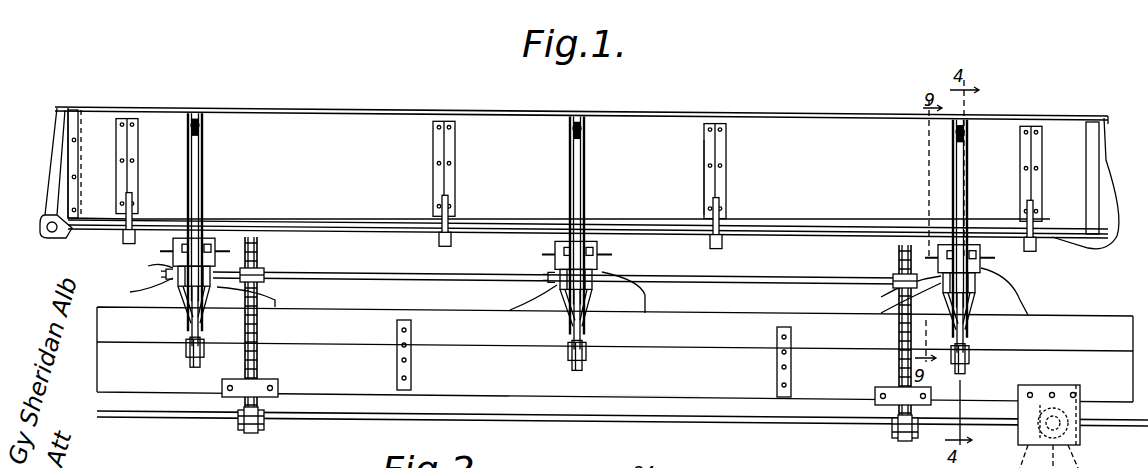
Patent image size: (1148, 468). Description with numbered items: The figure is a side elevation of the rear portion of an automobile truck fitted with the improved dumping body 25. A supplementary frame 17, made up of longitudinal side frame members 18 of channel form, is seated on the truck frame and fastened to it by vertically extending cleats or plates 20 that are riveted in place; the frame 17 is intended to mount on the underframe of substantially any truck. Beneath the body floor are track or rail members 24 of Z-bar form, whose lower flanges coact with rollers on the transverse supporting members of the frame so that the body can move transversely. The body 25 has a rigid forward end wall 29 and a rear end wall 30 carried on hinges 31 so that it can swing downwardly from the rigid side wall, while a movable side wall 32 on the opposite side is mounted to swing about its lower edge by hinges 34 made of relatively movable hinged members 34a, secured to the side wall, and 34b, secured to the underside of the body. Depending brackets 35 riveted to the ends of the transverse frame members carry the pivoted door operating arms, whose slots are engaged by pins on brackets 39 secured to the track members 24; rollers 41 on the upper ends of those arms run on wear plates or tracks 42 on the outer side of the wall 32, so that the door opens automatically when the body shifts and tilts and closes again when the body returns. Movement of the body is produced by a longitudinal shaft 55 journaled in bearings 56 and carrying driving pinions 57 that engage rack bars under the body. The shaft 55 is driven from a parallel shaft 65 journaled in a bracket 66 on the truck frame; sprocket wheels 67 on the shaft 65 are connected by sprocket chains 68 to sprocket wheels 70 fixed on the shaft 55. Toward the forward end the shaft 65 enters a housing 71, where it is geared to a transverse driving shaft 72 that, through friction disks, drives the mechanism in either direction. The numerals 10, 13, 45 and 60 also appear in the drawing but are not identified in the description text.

The main frame 10 is at (170, 386).
The frame member 13 is at (86, 431).
The supplementary frame 17 is at (718, 312).
The longitudinal side frame member 18 is at (652, 359).
The cleat or plate 20 is at (412, 364).
The track or rail member 24 is at (184, 221).
The truck body 25 is at (802, 130).
The forward end wall 29 is at (1100, 157).
The rear end wall 30 is at (66, 149).
The hinge 31 is at (50, 205).
The movable side wall 32 is at (590, 171).
The hinge 34 is at (136, 204).
The hinged member 34a is at (705, 180).
The hinged member 34b is at (128, 242).
The depending bracket 35 is at (194, 366).
The bracket 39 is at (214, 240).
The roller 41 is at (204, 141).
The wear plate or track 42 is at (204, 156).
The shank 45 is at (190, 325).
The shaft 55 is at (395, 279).
The bearing 56 is at (165, 290).
The driving pinion 57 is at (178, 302).
The arm 60 is at (173, 275).
The shaft 65 is at (532, 418).
The bracket 66 is at (230, 399).
The sprocket wheel 67 is at (250, 434).
The sprocket chain 68 is at (260, 326).
The sprocket wheel 70 is at (262, 253).
The housing 71 is at (1082, 428).
The transverse driving shaft 72 is at (1061, 436).